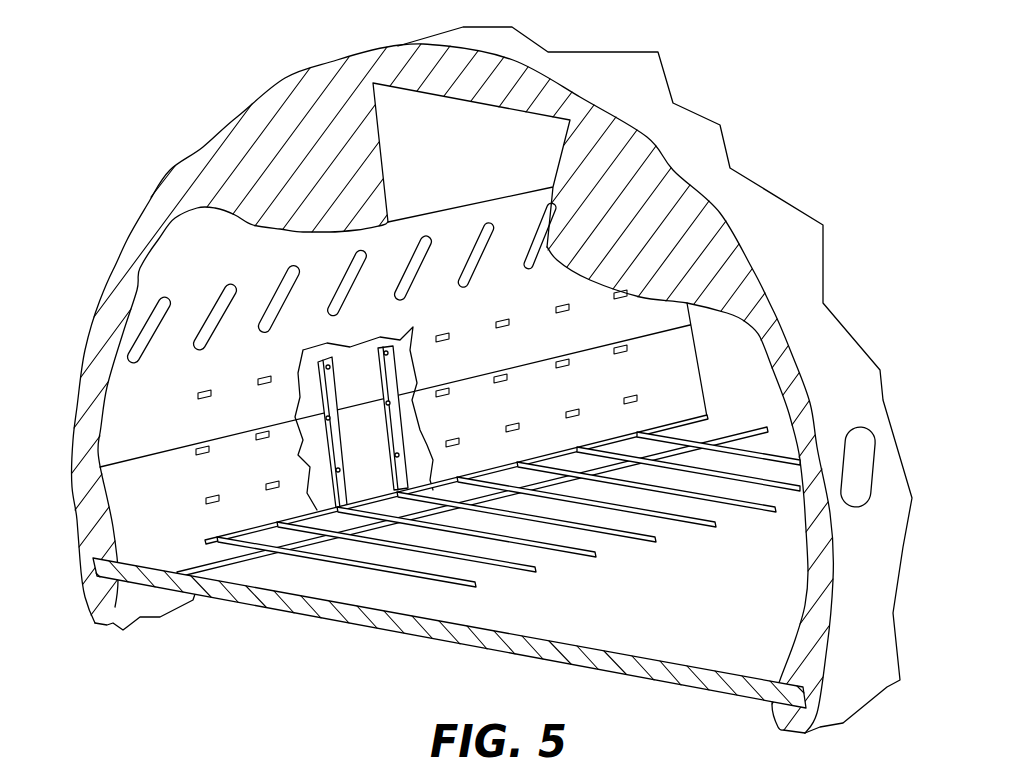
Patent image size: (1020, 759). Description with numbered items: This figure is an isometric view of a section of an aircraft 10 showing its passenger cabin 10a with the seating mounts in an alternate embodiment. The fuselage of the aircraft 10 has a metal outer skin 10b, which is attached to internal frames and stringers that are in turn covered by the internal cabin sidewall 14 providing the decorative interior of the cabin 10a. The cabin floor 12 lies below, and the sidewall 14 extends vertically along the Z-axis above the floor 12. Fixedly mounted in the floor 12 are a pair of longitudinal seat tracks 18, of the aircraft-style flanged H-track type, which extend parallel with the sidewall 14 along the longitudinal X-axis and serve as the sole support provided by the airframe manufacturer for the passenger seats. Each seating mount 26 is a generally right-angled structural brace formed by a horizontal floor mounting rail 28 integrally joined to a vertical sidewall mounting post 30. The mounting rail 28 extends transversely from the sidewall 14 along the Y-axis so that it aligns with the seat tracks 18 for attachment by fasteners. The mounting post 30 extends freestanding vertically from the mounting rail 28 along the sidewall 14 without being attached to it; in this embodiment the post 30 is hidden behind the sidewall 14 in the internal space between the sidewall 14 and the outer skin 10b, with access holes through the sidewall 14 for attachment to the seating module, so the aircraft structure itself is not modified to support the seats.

The aircraft 10 is at (692, 130).
The passenger cabin 10a is at (478, 173).
The metal outer skin 10b is at (100, 287).
The floor 12 is at (650, 680).
The sidewall 14 is at (159, 418).
The seat tracks 18 is at (307, 587).
The seating mount 26 is at (475, 502).
The floor mounting rail 28 is at (616, 538).
The sidewall mounting post 30 is at (400, 438).